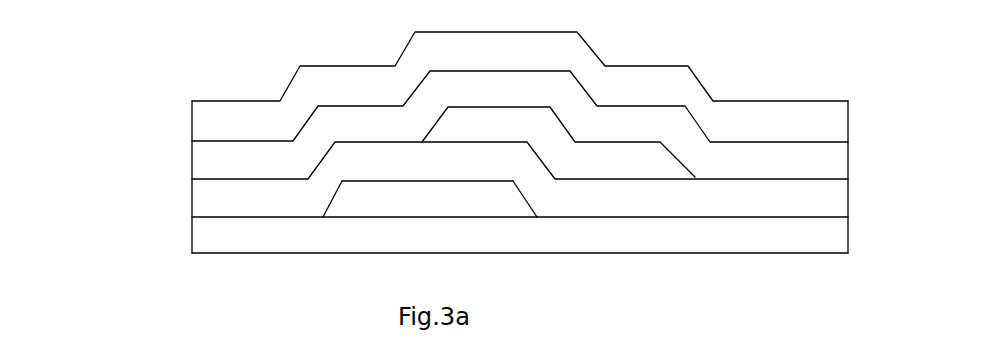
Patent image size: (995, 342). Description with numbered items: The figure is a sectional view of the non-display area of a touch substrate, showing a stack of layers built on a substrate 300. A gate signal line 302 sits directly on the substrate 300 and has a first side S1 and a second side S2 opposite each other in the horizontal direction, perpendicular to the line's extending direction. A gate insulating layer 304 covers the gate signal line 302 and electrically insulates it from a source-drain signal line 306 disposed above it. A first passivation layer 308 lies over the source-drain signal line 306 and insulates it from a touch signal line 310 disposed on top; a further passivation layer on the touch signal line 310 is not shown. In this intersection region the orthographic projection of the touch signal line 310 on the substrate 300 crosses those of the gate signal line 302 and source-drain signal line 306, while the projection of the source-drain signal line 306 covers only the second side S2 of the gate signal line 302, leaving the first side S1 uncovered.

The substrate 300 is at (223, 245).
The gate signal line 302 is at (368, 207).
The gate insulating layer 304 is at (223, 185).
The source-drain signal line 306 is at (482, 125).
The first passivation layer 308 is at (223, 160).
The touch signal line 310 is at (303, 77).
The first side S1 is at (324, 198).
The second side S2 is at (535, 198).